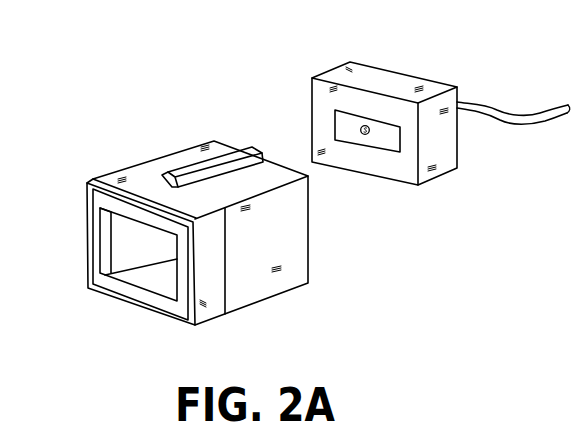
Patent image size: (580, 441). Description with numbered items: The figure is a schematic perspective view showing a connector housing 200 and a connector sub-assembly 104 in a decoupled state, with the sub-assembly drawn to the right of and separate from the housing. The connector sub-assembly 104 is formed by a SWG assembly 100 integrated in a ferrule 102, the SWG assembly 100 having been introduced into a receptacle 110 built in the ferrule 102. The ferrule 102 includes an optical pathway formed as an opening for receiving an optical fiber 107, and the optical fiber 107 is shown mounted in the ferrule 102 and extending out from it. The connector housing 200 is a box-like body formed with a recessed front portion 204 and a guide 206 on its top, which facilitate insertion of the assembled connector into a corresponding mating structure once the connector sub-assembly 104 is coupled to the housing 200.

The SWG assembly 100 is at (388, 133).
The ferrule 102 is at (404, 74).
The connector sub-assembly 104 is at (325, 64).
The optical fiber 107 is at (368, 134).
The receptacle 110 is at (400, 142).
The connector housing 200 is at (188, 116).
The recessed front portion 204 is at (194, 331).
The guide 206 is at (243, 151).